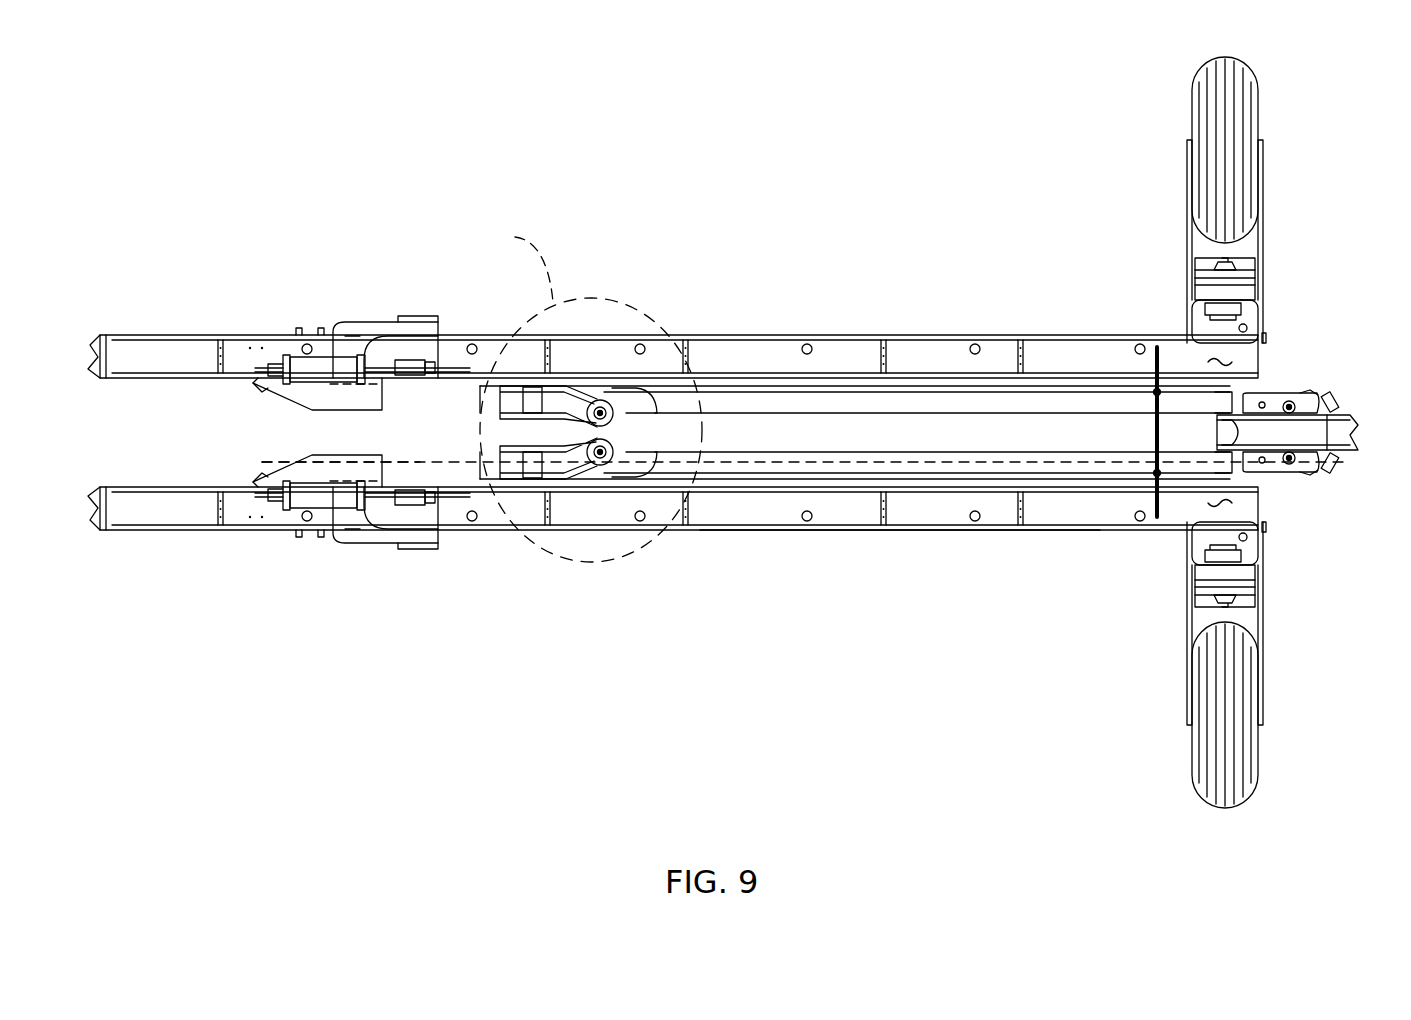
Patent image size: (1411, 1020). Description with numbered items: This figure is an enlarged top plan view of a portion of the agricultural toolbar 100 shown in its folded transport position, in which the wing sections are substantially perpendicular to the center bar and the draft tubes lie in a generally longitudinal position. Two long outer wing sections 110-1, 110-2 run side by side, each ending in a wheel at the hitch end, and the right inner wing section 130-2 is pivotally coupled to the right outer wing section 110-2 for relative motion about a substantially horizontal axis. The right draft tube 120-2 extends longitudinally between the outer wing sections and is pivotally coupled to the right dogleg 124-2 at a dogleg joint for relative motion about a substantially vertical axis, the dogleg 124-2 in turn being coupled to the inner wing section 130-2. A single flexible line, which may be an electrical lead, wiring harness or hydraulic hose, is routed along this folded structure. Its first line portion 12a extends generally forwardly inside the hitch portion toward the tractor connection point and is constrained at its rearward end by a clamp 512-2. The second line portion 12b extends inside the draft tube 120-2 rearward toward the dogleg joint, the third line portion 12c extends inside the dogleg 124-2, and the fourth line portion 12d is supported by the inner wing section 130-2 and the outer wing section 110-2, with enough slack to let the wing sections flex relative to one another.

The agricultural toolbar 100 is at (504, 781).
The outer wing section 110-1 is at (768, 335).
The outer wing section 110-2 is at (847, 530).
The draft tube 120-2 is at (733, 449).
The dogleg 124-2 is at (450, 460).
The inner wing section 130-2 is at (183, 530).
The first line portion 12a is at (1352, 462).
The second line portion 12b is at (908, 440).
The third line portion 12c is at (380, 448).
The fourth line portion 12d is at (770, 507).
The clamp 512-2 is at (1335, 470).